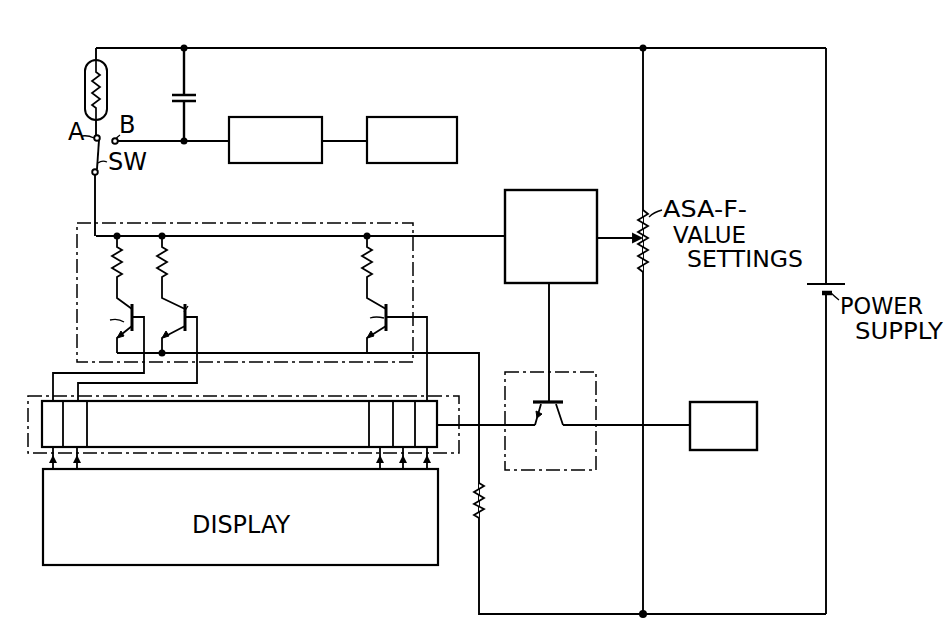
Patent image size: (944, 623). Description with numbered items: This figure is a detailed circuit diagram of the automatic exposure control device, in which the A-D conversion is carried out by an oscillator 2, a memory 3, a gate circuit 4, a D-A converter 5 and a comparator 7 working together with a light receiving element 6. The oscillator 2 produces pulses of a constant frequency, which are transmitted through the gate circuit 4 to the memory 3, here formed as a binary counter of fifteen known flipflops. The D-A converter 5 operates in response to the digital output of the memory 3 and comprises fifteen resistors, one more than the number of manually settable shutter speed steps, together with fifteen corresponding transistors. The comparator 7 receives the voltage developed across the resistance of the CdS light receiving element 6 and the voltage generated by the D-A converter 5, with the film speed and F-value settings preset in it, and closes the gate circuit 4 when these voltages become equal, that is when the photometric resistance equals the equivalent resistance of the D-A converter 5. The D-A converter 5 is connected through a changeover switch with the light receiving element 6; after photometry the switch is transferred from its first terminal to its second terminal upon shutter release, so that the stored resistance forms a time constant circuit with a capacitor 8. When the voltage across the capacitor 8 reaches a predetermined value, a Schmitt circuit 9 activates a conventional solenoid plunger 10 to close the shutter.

The oscillator 2 is at (754, 396).
The memory 3 is at (440, 396).
The gate circuit 4 is at (576, 372).
The D-A converter 5 is at (399, 224).
The light receiving element 6 is at (88, 72).
The comparator 7 is at (578, 178).
The capacitor 8 is at (187, 95).
The Schmitt circuit 9 is at (305, 105).
The solenoid plunger 10 is at (443, 105).